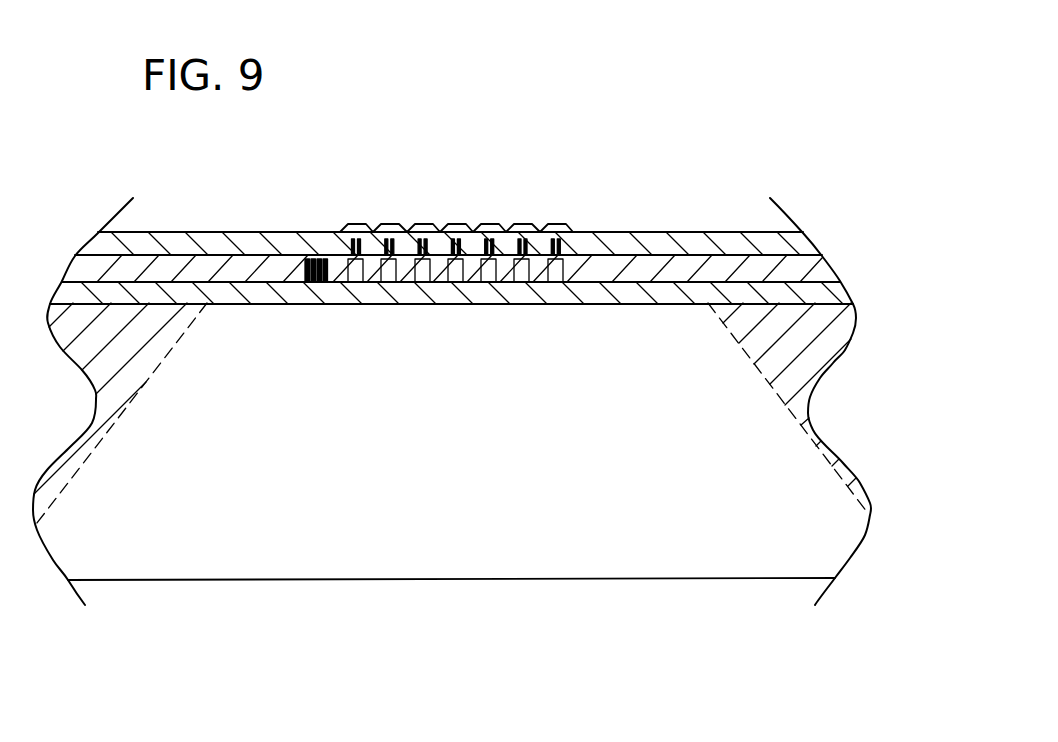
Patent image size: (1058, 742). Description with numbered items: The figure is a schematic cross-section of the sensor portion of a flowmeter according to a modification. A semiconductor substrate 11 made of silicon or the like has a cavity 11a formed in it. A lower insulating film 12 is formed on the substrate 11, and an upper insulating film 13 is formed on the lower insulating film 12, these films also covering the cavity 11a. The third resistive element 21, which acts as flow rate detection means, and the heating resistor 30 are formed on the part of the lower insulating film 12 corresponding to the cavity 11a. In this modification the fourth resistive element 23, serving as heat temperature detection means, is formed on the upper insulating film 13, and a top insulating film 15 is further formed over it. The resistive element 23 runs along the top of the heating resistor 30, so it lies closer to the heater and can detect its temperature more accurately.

The semiconductor substrate 11 is at (827, 360).
The cavity 11a is at (408, 553).
The lower insulating film 12 is at (743, 290).
The upper insulating film 13 is at (703, 265).
The top insulating film 15 is at (660, 240).
The third resistive element 21 is at (314, 258).
The fourth resistive element 23 is at (527, 253).
The heating resistor 30 is at (572, 233).